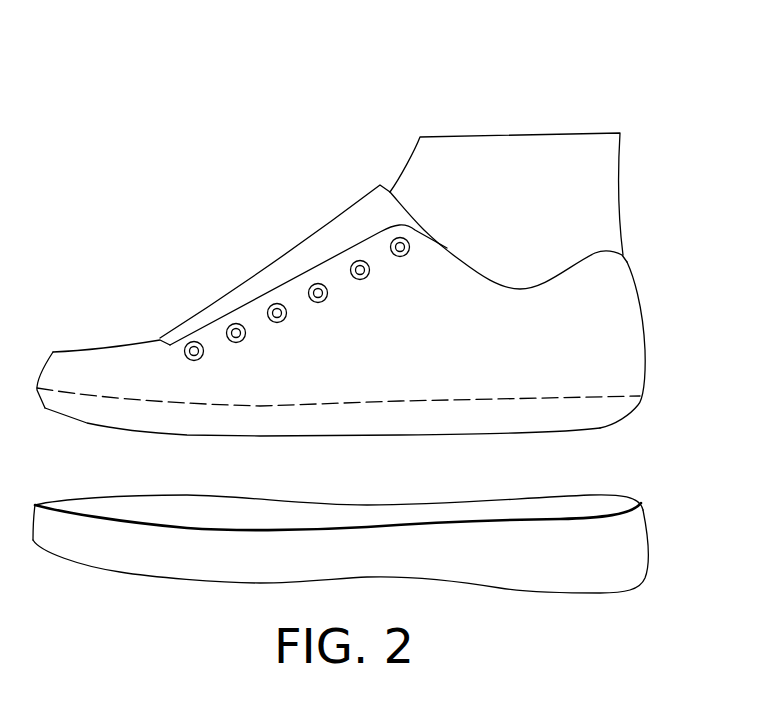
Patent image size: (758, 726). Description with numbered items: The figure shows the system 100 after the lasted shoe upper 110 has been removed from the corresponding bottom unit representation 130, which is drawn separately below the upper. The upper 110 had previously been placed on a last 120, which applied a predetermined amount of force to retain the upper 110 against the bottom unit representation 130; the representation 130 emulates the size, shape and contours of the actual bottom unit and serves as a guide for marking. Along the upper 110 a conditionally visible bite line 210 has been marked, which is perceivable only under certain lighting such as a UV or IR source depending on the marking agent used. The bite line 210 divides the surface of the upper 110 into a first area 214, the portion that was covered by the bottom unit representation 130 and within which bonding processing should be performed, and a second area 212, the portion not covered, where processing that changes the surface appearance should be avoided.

The system 100 is at (707, 93).
The shoe upper 110 is at (622, 287).
The last 120 is at (495, 148).
The bottom unit representation 130 is at (632, 552).
The conditionally visible bite line 210 is at (610, 397).
The second area 212 is at (135, 370).
The first area 214 is at (112, 417).